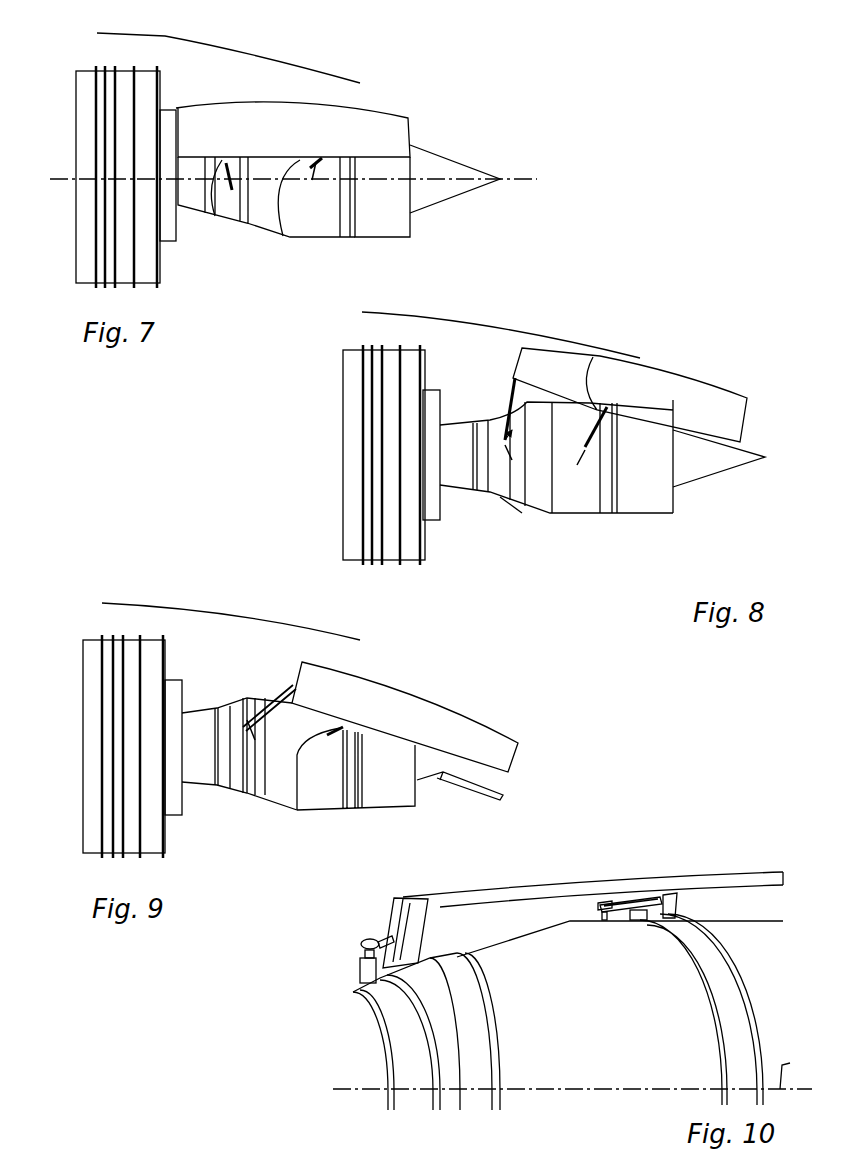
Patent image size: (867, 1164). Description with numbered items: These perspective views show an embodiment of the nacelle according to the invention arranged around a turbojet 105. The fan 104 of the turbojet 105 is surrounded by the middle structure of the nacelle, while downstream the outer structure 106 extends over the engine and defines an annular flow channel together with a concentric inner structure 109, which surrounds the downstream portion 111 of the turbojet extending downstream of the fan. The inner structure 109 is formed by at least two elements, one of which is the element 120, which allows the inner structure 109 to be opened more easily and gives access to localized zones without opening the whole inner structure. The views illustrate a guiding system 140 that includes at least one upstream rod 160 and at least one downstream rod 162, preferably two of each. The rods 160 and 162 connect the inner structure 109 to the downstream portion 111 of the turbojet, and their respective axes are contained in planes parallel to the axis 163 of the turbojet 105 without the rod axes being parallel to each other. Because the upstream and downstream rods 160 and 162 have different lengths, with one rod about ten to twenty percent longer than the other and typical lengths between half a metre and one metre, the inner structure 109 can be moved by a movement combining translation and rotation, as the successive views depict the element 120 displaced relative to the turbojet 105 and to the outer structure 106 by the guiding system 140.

In FIG. 7, the fan 104 is at (78, 86).
In FIG. 8, the fan 104 is at (343, 366).
In FIG. 9, the fan 104 is at (90, 662).
In FIG. 7, the turbojet 105 is at (318, 243).
In FIG. 8, the turbojet 105 is at (630, 525).
In FIG. 9, the turbojet 105 is at (340, 820).
In FIG. 10, the turbojet 105 is at (733, 1040).
In FIG. 7, the outer structure 106 is at (258, 58).
In FIG. 8, the outer structure 106 is at (470, 325).
In FIG. 9, the outer structure 106 is at (265, 628).
In FIG. 7, the inner structure 109 is at (400, 112).
In FIG. 8, the inner structure 109 is at (738, 380).
In FIG. 9, the inner structure 109 is at (490, 712).
In FIG. 10, the inner structure 109 is at (742, 863).
In FIG. 7, the downstream portion of the turbojet 111 is at (190, 200).
In FIG. 7, the element of the inner structure 120 is at (376, 102).
In FIG. 8, the element of the inner structure 120 is at (672, 364).
In FIG. 9, the element of the inner structure 120 is at (428, 682).
In FIG. 10, the element of the inner structure 120 is at (683, 877).
In FIG. 7, the guiding system 140 is at (312, 182).
In FIG. 8, the guiding system 140 is at (578, 465).
In FIG. 9, the guiding system 140 is at (272, 690).
In FIG. 10, the guiding system 140 is at (372, 932).
In FIG. 7, the upstream rod 160 is at (230, 196).
In FIG. 8, the upstream rod 160 is at (510, 402).
In FIG. 9, the upstream rod 160 is at (257, 780).
In FIG. 10, the upstream rod 160 is at (362, 940).
In FIG. 7, the downstream rod 162 is at (276, 205).
In FIG. 8, the downstream rod 162 is at (600, 395).
In FIG. 9, the downstream rod 162 is at (302, 755).
In FIG. 10, the downstream rod 162 is at (622, 897).
In FIG. 7, the axis of the turbojet 163 is at (520, 177).
In FIG. 10, the axis of the turbojet 163 is at (804, 1071).